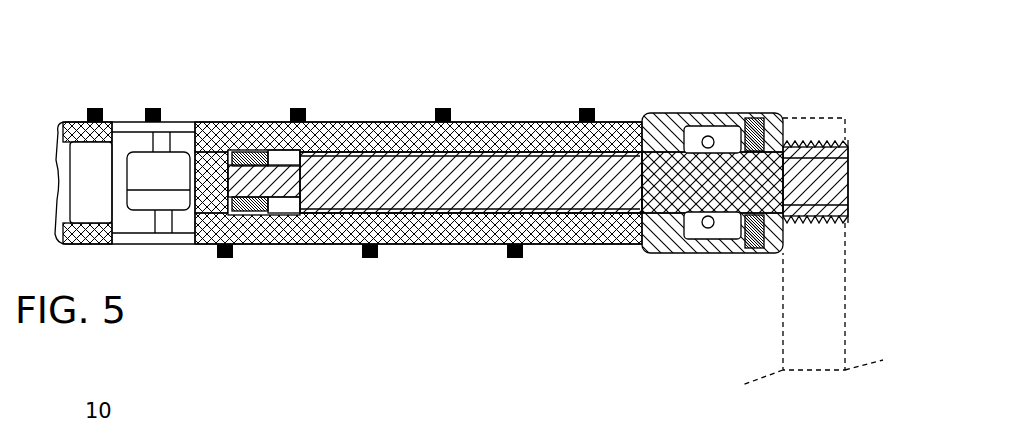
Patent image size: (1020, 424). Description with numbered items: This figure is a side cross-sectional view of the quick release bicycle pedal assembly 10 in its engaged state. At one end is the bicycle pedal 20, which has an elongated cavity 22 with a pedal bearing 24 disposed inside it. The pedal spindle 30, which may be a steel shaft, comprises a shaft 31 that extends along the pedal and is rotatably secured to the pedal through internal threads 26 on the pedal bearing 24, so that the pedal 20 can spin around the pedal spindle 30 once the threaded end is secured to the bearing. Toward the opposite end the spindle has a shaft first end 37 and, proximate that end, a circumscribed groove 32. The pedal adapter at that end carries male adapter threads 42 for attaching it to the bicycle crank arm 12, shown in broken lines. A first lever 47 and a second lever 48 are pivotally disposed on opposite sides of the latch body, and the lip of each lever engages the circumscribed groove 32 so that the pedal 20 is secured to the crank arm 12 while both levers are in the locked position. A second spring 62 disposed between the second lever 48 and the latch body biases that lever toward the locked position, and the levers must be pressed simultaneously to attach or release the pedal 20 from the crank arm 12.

The quick release bicycle pedal assembly 10 is at (140, 65).
The bicycle crank arm 12 is at (840, 303).
The bicycle pedal 20 is at (488, 125).
The elongated cavity 22 is at (400, 244).
The pedal bearing 24 is at (255, 204).
The internal threads 26 is at (243, 152).
The pedal spindle 30 is at (578, 188).
The shaft 31 is at (565, 198).
The circumscribed groove 32 is at (653, 222).
The shaft first end 37 is at (825, 190).
The male adapter threads 42 is at (827, 145).
The first lever 47 is at (690, 118).
The second lever 48 is at (693, 250).
The second spring 62 is at (755, 118).